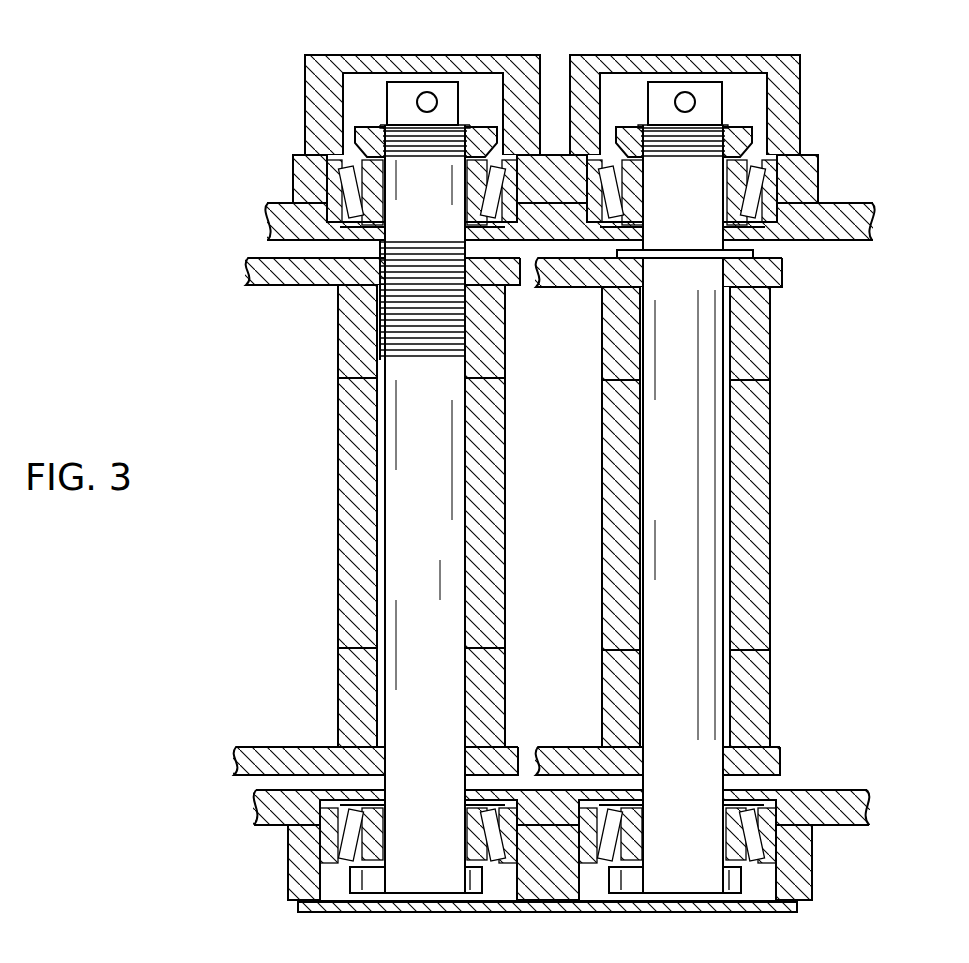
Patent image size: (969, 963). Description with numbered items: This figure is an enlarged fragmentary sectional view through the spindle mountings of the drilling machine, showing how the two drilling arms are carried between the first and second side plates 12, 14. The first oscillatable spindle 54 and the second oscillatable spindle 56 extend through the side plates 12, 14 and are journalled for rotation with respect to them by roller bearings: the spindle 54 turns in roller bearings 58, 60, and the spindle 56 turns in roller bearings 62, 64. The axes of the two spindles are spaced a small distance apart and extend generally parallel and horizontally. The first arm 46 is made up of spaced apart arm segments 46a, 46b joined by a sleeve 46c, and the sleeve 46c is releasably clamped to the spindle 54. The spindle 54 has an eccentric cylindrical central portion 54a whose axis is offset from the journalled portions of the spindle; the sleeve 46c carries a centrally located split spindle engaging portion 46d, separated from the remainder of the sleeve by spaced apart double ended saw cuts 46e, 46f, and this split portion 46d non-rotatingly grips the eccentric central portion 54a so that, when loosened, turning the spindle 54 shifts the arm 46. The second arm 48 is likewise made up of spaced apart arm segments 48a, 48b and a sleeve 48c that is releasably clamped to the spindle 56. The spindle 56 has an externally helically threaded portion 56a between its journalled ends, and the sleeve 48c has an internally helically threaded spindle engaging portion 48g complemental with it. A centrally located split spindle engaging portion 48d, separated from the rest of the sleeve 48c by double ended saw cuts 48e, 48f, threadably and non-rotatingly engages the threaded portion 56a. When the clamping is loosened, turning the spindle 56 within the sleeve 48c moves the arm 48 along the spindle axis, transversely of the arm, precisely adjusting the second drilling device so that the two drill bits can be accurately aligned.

The first side plate 12 is at (833, 823).
The second side plate 14 is at (848, 215).
The first arm 46 is at (775, 303).
The arm segment 46a is at (567, 288).
The arm segment 46b is at (562, 755).
The sleeve 46c is at (770, 472).
The split spindle engaging portion 46d is at (752, 537).
The double ended saw cut 46e is at (747, 383).
The double ended saw cut 46f is at (750, 647).
The second arm 48 is at (545, 365).
The arm segment 48a is at (345, 268).
The arm segment 48b is at (330, 743).
The sleeve 48c is at (545, 460).
The split spindle engaging portion 48d is at (493, 518).
The double ended saw cut 48e is at (545, 412).
The double ended saw cut 48f is at (483, 643).
The internally helically threaded spindle engaging portion 48g is at (370, 377).
The first oscillatable spindle 54 is at (753, 150).
The eccentric cylindrical central portion 54a is at (737, 355).
The second oscillatable spindle 56 is at (505, 150).
The externally helically threaded portion 56a is at (395, 322).
The roller bearing 58 is at (773, 853).
The roller bearing 60 is at (783, 180).
The roller bearing 62 is at (517, 860).
The roller bearing 64 is at (327, 197).